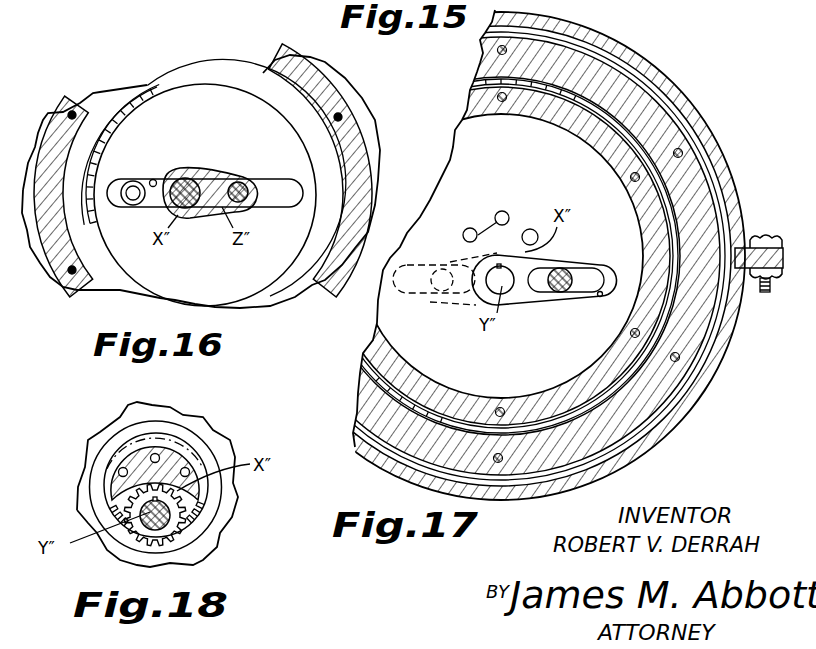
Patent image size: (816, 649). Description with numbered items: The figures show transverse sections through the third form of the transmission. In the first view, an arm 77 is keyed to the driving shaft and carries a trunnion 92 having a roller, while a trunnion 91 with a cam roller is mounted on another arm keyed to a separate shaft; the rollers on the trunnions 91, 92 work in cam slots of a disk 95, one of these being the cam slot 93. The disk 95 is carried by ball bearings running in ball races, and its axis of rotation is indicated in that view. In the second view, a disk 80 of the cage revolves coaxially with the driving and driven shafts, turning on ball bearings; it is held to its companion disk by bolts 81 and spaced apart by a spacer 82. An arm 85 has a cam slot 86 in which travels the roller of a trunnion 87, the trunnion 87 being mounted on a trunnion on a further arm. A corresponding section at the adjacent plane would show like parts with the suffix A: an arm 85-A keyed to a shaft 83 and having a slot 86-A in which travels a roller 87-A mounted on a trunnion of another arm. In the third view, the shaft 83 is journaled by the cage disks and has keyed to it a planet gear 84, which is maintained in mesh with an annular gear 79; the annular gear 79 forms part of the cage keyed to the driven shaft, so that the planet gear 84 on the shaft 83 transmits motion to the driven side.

In FIG. 16, the arm 77 is at (213, 173).
In FIG. 16, the trunnion 91 is at (133, 182).
In FIG. 16, the trunnion 92 is at (249, 186).
In FIG. 16, the cam slot 93 is at (158, 182).
In FIG. 16, the disk 95 is at (214, 277).
In FIG. 17, the disk 80 is at (529, 176).
In FIG. 17, the bolts 81 is at (509, 217).
In FIG. 18, the bolts 81 is at (170, 455).
In FIG. 17, the arm 85 is at (522, 298).
In FIG. 17, the arm 85-A is at (460, 262).
In FIG. 17, the cam slot 86 is at (586, 293).
In FIG. 17, the slot 86-A is at (430, 289).
In FIG. 17, the trunnion 87 is at (569, 275).
In FIG. 17, the roller 87-A is at (438, 278).
In FIG. 18, the spacer 82 is at (132, 460).
In FIG. 18, the planet gear 84 is at (181, 515).
In FIG. 18, the annular gear 79 is at (198, 518).
In FIG. 18, the shaft 83 is at (170, 523).